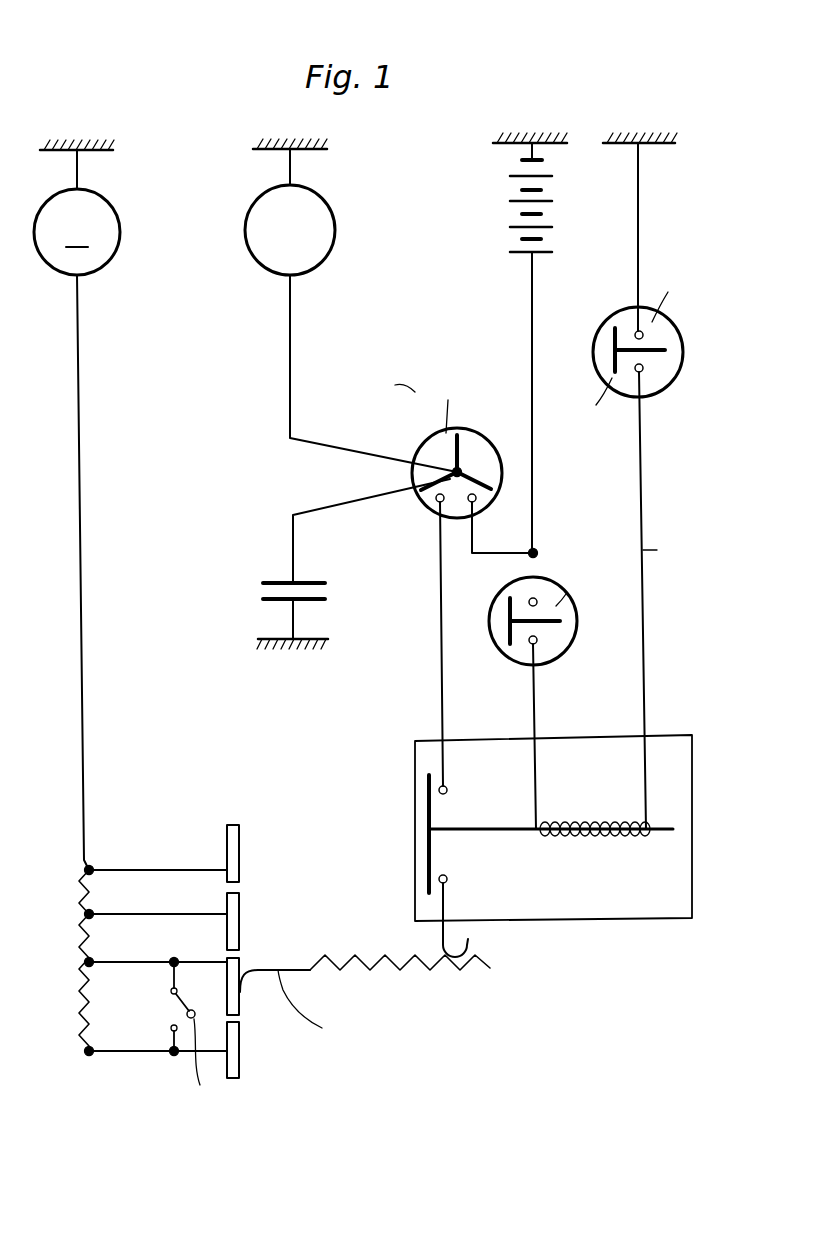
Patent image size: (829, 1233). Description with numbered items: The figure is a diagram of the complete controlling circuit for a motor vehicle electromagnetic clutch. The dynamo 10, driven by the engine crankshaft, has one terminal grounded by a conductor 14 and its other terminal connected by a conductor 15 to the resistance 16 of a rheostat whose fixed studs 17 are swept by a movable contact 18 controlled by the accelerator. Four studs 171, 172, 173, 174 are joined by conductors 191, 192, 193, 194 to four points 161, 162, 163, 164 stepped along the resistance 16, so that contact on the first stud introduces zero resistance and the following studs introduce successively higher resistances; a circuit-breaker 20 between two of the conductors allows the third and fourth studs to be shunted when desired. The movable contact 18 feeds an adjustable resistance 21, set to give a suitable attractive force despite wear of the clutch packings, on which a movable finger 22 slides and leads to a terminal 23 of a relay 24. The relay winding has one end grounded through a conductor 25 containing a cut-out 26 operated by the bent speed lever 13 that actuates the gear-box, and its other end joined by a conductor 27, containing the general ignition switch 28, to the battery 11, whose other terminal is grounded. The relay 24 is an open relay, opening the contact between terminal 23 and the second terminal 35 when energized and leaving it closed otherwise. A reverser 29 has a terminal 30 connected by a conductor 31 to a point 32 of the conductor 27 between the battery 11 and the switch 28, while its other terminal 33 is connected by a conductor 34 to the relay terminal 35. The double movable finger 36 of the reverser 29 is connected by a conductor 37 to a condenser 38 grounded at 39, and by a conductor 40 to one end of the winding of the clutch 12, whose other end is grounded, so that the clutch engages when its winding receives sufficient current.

The dynamo 10 is at (120, 236).
The battery of accumulators 11 is at (502, 217).
The electromagnetic clutch 12 is at (344, 232).
The speed lever 13 is at (606, 314).
The conductor 14 is at (79, 171).
The conductor 15 is at (80, 667).
The resistance 16 is at (79, 976).
The point 161 is at (93, 866).
The point 162 is at (93, 910).
The point 163 is at (93, 958).
The point 164 is at (93, 1047).
The fixed studs 17 is at (256, 927).
The stud 171 is at (243, 852).
The stud 172 is at (243, 920).
The stud 173 is at (243, 1006).
The stud 174 is at (243, 1066).
The movable contact 18 is at (275, 970).
The conductor 191 is at (168, 869).
The conductor 192 is at (171, 913).
The conductor 193 is at (155, 961).
The conductor 194 is at (147, 1050).
The circuit-breaker 20 is at (194, 1004).
The resistance 21 is at (385, 976).
The movable finger 22 is at (447, 907).
The terminal 23 is at (448, 876).
The relay 24 is at (548, 922).
The conductor 25 is at (661, 550).
The cut-out 26 is at (650, 398).
The conductor 27 is at (534, 338).
The general ignition switch 28 is at (566, 648).
The reverser 29 is at (482, 432).
The terminal 30 is at (476, 502).
The conductor 31 is at (498, 554).
The point 32 is at (538, 550).
The terminal 33 is at (436, 503).
The conductor 34 is at (440, 664).
The terminal 35 is at (448, 787).
The double movable finger 36 is at (455, 470).
The conductor 37 is at (313, 508).
The condenser 38 is at (251, 596).
The ground 39 is at (291, 621).
The conductor 40 is at (312, 444).